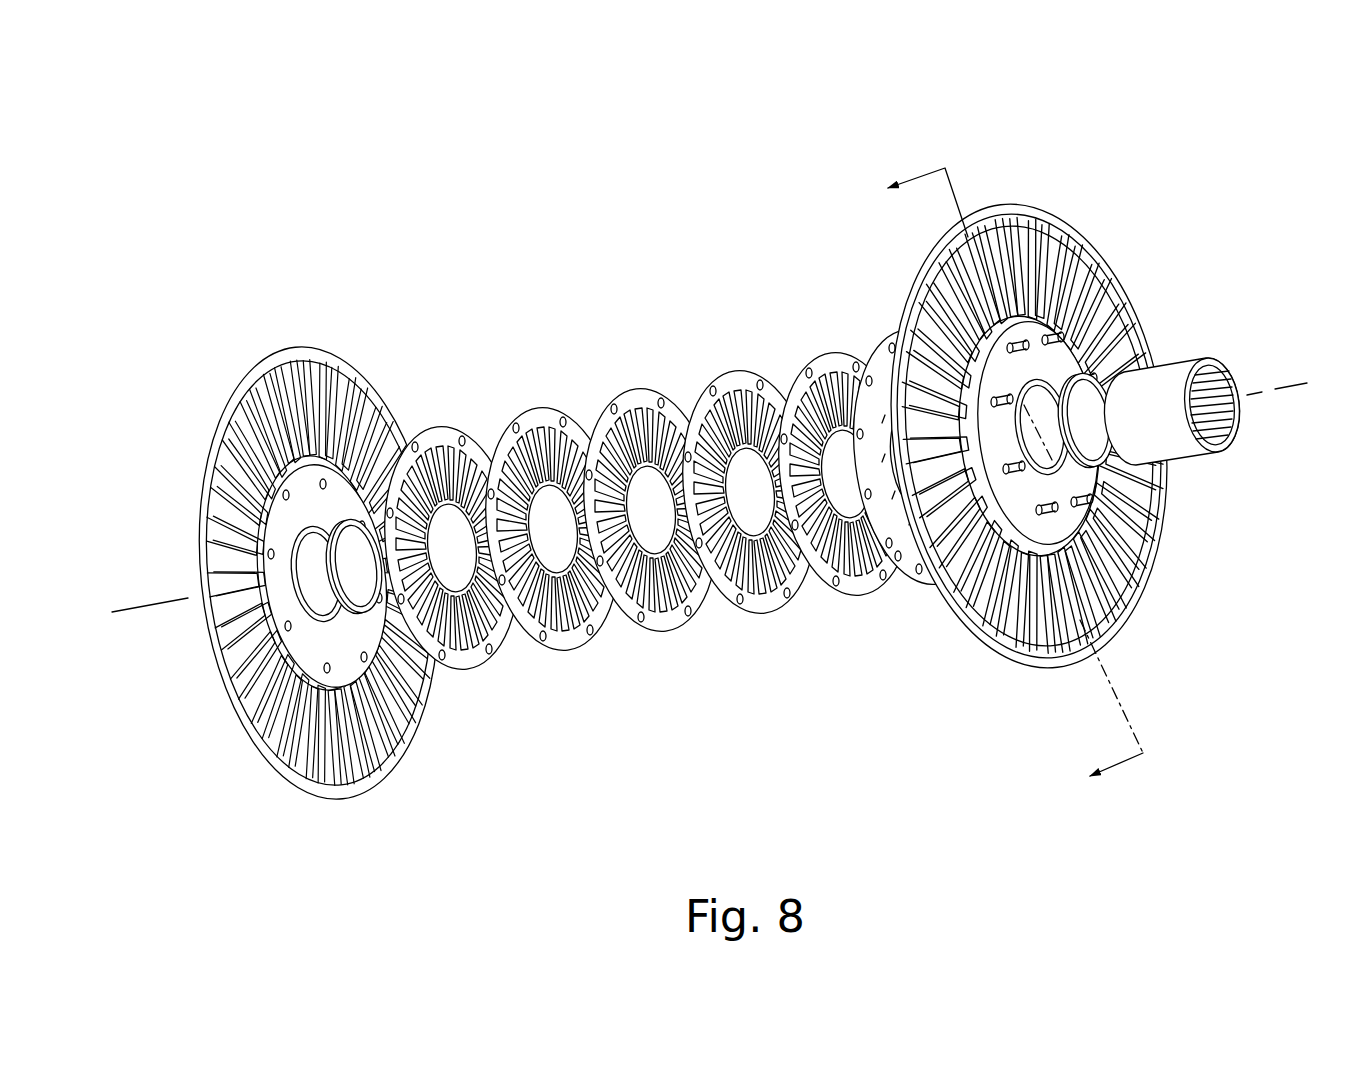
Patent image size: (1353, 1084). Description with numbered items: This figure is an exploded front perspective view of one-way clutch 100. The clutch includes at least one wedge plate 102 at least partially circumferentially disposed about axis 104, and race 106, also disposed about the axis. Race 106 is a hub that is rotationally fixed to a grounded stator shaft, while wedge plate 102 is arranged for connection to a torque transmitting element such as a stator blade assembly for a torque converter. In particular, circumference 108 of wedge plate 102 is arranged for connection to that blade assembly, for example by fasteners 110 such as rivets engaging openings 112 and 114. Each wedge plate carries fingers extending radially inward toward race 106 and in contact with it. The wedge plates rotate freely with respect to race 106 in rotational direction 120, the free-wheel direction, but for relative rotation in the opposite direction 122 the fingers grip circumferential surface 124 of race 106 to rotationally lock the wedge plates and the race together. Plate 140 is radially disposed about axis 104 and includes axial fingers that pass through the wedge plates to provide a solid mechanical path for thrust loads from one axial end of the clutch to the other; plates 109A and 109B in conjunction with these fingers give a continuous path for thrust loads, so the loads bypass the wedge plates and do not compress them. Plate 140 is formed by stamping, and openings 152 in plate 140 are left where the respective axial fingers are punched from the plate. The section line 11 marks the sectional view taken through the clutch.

The one-way clutch 100 is at (1246, 225).
The wedge plate 102 is at (668, 366).
The axis 104 is at (1262, 392).
The race 106 is at (1173, 355).
The circumference 108 is at (527, 405).
The plate 109A is at (282, 340).
The plate 109B is at (1072, 238).
The fasteners 110 is at (1128, 550).
The openings 112 is at (1045, 560).
The openings 114 is at (488, 652).
The rotational direction 120 is at (152, 553).
The rotational direction 122 is at (123, 553).
The circumferential surface 124 is at (1175, 437).
The plate 140 is at (867, 362).
The openings 152 is at (898, 560).
The section line 11- 11 is at (985, 490).